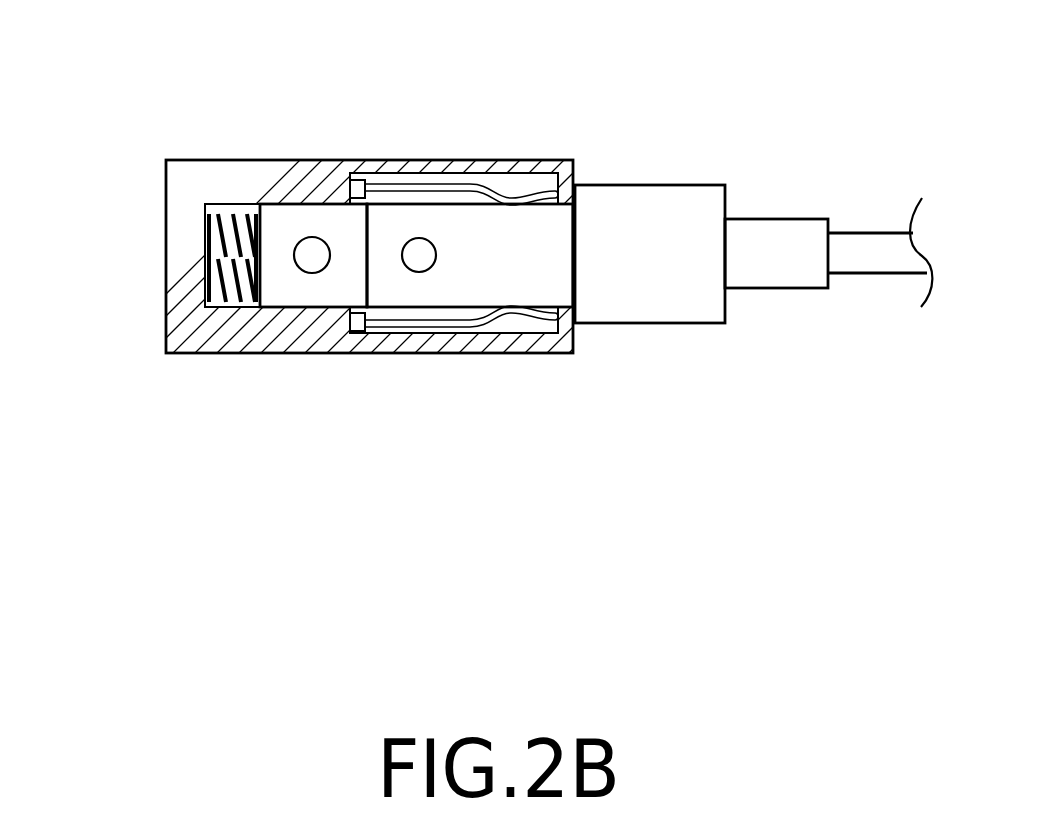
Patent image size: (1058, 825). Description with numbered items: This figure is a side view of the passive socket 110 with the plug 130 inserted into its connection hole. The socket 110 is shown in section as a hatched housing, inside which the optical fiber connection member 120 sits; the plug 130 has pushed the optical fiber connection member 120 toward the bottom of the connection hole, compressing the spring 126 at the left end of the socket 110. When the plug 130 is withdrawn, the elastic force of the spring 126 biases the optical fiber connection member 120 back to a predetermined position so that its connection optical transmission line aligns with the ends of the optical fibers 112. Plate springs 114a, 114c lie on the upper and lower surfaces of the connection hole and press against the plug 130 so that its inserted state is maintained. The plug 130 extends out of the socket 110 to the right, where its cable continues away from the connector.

The socket 110 is at (220, 160).
The optical fiber 112 is at (312, 263).
The plate spring 114a is at (469, 184).
The plate spring 114c is at (464, 322).
The optical fiber connection member 120 is at (311, 218).
The spring 126 is at (207, 273).
The plug 130 is at (648, 185).